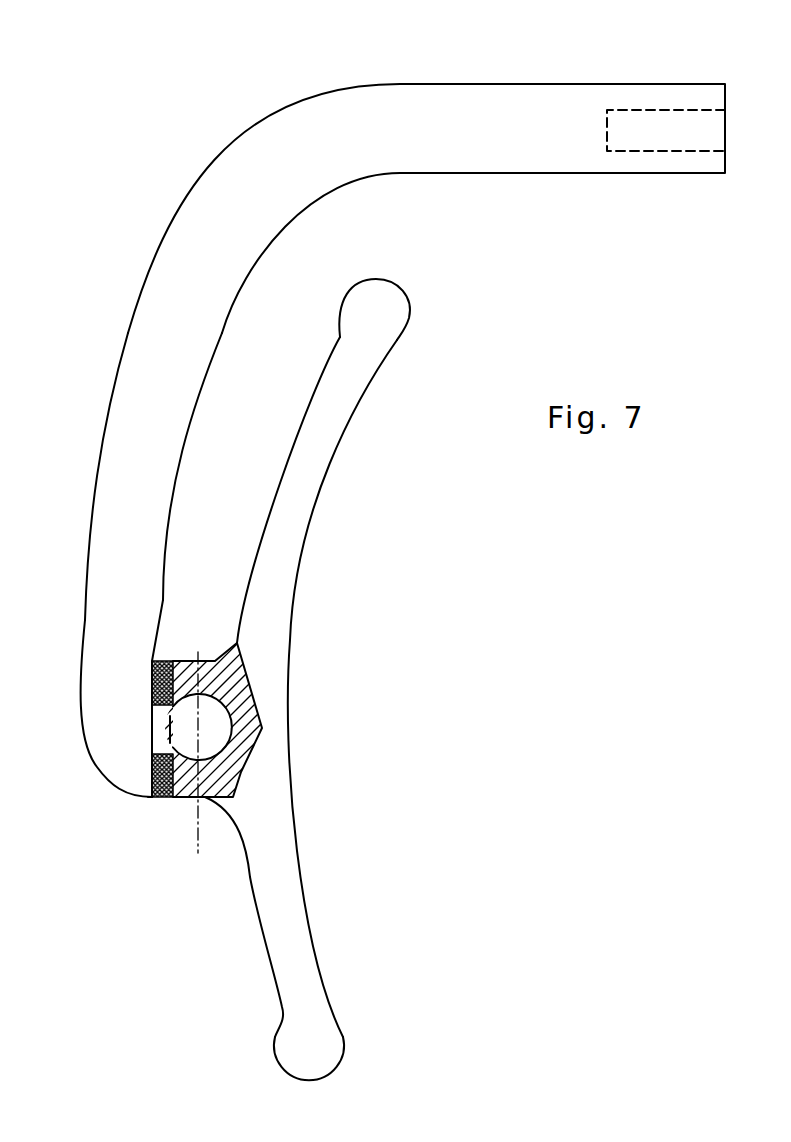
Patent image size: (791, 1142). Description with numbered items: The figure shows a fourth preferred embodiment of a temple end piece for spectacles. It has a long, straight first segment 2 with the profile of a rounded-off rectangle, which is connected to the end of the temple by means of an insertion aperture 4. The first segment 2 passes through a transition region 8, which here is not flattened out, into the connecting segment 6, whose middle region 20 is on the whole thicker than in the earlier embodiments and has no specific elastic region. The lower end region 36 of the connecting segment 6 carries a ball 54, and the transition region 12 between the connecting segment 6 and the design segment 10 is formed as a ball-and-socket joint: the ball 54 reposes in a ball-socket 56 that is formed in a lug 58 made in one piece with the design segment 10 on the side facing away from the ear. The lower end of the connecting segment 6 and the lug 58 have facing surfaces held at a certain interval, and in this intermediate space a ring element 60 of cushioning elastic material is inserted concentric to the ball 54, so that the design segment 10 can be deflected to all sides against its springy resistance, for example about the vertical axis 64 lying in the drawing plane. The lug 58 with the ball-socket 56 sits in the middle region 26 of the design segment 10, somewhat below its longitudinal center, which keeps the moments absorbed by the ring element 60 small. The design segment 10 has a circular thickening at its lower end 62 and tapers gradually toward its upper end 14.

The first segment 2 is at (424, 92).
The insertion aperture 4 is at (632, 125).
The connecting segment 6 is at (128, 312).
The transition region 8 is at (258, 140).
The design segment 10 is at (314, 548).
The transition region 12 is at (135, 808).
The end 14 is at (375, 312).
The middle region 20 is at (160, 355).
The middle region 26 is at (282, 602).
The end region 36 is at (103, 612).
The ball 54 is at (191, 745).
The ball-socket 56 is at (207, 698).
The lug 58 is at (227, 780).
The ring element 60 is at (173, 662).
The end 62 is at (293, 1040).
The axis 64 is at (200, 840).